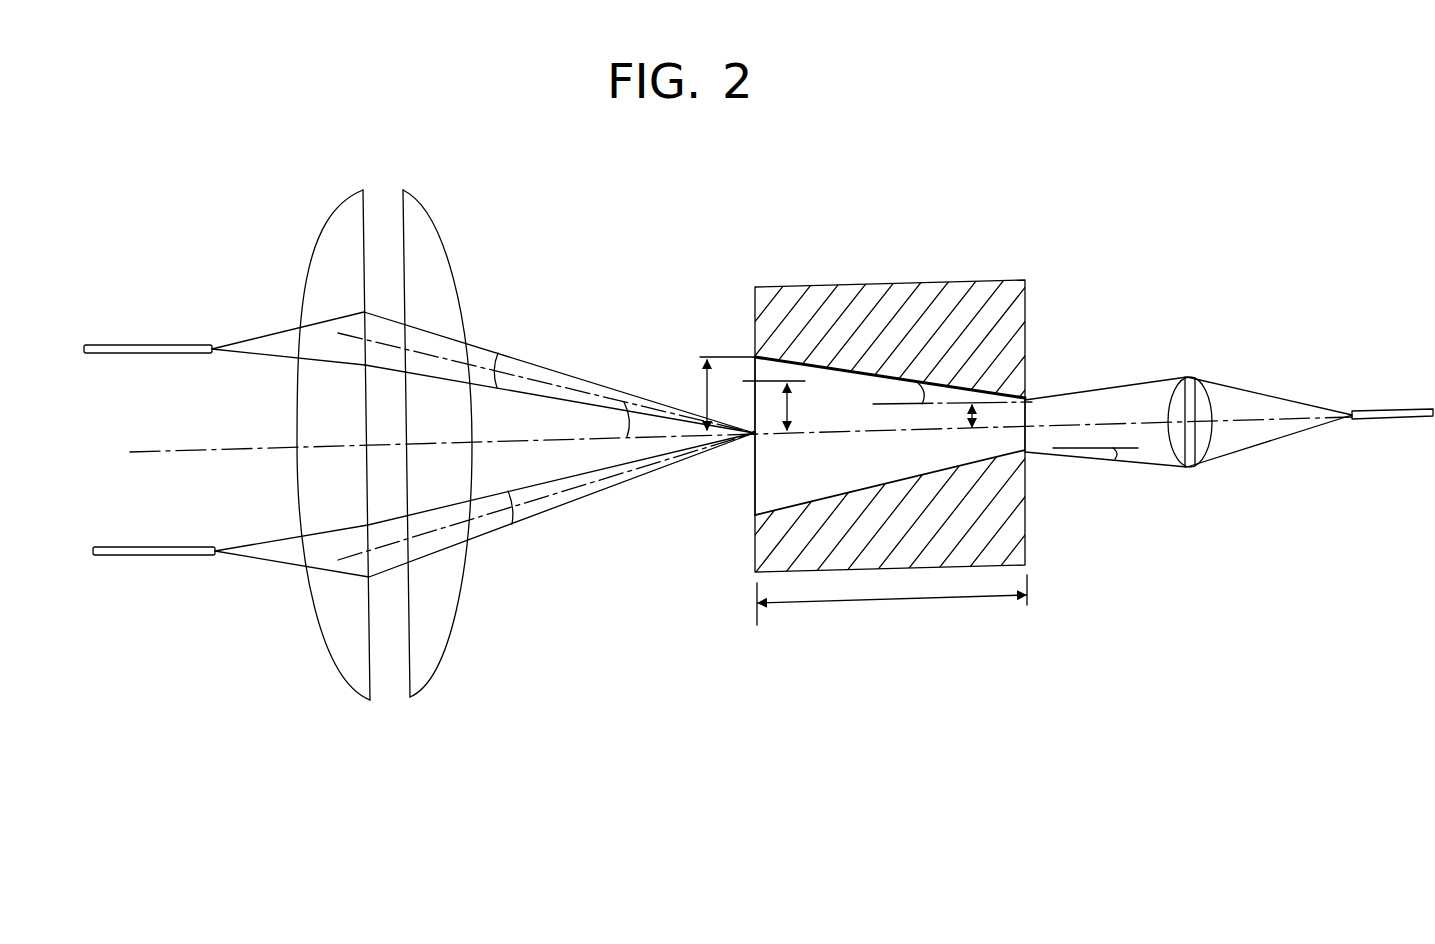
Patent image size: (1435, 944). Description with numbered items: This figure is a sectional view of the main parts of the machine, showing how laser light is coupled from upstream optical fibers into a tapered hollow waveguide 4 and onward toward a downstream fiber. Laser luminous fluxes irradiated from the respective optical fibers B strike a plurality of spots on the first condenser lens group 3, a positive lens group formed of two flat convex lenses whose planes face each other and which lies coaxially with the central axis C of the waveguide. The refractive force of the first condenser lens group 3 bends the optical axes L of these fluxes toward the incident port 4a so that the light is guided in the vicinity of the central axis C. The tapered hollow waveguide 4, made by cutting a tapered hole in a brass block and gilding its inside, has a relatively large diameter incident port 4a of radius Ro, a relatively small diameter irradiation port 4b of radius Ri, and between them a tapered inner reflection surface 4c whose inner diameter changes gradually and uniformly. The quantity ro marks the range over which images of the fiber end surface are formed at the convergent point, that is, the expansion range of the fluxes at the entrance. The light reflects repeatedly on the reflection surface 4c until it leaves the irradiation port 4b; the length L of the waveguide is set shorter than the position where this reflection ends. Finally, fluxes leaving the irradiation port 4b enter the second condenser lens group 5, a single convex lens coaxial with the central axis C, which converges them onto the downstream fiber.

The optical fiber B is at (154, 345).
The optical axis L is at (433, 357).
The first condenser lens group 3 is at (411, 697).
The tapered hollow waveguide 4 is at (757, 563).
The incident port 4a is at (757, 492).
The irradiation port 4b is at (1030, 438).
The tapered inner reflection surface 4c is at (910, 479).
The central axis C is at (807, 435).
The radius of the incident port Ro is at (705, 393).
The image forming range ro is at (781, 405).
The radius of the irradiation port Ri is at (952, 417).
The second condenser lens group 5 is at (1187, 470).